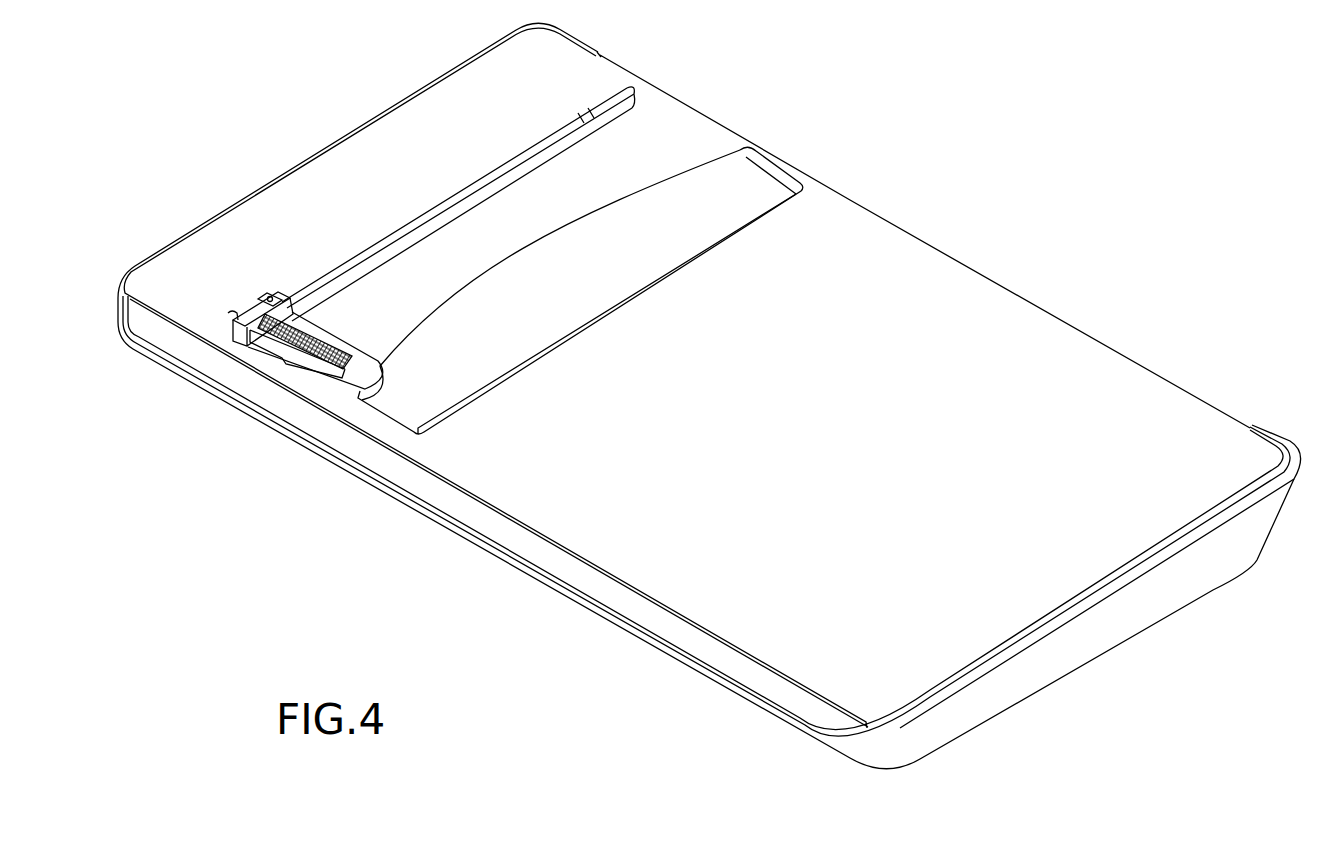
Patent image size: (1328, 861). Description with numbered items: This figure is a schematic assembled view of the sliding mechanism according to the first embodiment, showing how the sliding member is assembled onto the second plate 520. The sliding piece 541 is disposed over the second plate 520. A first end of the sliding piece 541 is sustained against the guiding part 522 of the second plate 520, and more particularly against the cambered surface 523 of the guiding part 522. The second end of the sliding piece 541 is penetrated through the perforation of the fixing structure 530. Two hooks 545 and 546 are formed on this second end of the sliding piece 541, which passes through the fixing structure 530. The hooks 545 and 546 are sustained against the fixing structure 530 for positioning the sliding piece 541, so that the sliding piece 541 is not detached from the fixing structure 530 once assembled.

The second plate 520 is at (982, 300).
The guiding part 522 is at (537, 333).
The cambered surface 523 is at (360, 380).
The fixing structure 530 is at (214, 324).
The sliding piece 541 is at (316, 380).
The hook 545 is at (228, 317).
The hook 546 is at (253, 312).